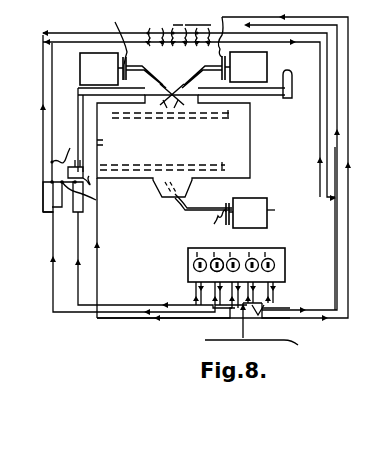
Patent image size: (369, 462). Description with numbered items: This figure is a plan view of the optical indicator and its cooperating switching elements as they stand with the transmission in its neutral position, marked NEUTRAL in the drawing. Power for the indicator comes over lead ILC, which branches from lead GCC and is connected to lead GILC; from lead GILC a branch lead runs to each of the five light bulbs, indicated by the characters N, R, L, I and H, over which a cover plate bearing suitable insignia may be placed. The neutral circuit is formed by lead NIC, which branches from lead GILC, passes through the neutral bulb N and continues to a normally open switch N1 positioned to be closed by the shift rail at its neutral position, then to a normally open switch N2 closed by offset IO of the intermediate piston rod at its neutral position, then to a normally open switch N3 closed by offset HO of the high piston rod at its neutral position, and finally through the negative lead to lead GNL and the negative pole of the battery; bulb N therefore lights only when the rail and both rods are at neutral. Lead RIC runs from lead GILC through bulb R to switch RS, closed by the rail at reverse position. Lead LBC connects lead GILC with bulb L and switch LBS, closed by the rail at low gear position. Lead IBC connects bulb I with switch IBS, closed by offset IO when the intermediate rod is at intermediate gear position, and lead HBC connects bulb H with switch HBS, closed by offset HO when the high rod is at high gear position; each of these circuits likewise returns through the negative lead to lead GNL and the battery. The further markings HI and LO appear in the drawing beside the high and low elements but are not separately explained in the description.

The switch N2 is at (114, 45).
The switch IBS is at (150, 28).
The switch HBS is at (195, 26).
The switch N3 is at (222, 24).
The bulb I is at (78, 70).
The offset IO is at (146, 83).
The offset HO is at (192, 87).
The bulb H is at (267, 64).
The HI conductor HI is at (349, 112).
The switch RS is at (60, 173).
The neutral bar box NEUTRAL is at (250, 144).
The lead ILC is at (316, 160).
The switch LBS is at (90, 185).
The switch N1 is at (85, 197).
The bulb L is at (258, 221).
The L operating contact LO is at (207, 224).
The lead GNL is at (332, 224).
The neutral bulb N is at (236, 269).
The bulb R is at (217, 251).
The lead NIC is at (172, 306).
The lead IBC is at (318, 307).
The lead RIC is at (62, 315).
The lead LBC is at (120, 320).
The lead GILC is at (258, 312).
The lead HBC is at (341, 324).
The lead GCC is at (257, 348).